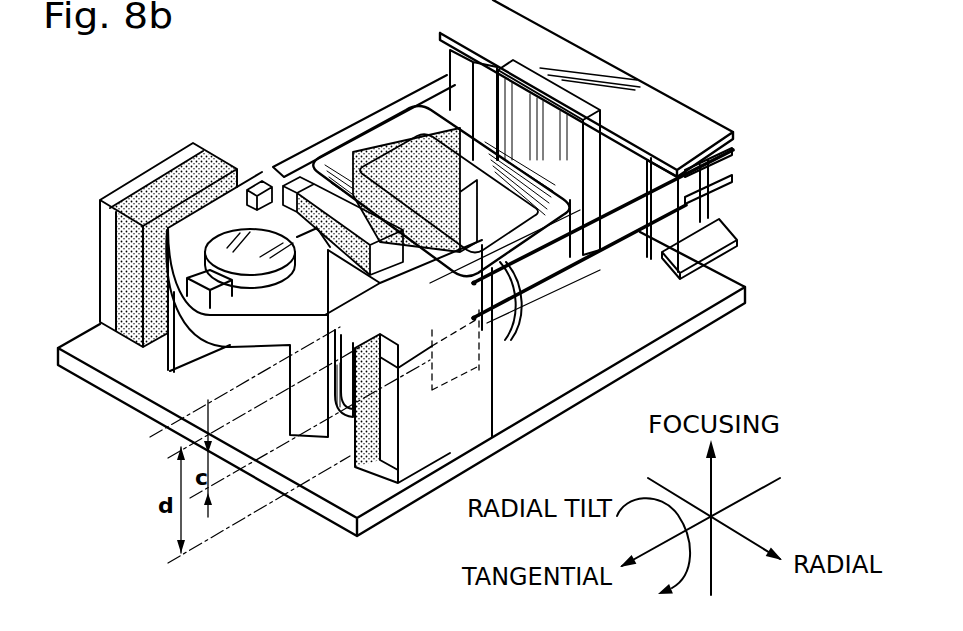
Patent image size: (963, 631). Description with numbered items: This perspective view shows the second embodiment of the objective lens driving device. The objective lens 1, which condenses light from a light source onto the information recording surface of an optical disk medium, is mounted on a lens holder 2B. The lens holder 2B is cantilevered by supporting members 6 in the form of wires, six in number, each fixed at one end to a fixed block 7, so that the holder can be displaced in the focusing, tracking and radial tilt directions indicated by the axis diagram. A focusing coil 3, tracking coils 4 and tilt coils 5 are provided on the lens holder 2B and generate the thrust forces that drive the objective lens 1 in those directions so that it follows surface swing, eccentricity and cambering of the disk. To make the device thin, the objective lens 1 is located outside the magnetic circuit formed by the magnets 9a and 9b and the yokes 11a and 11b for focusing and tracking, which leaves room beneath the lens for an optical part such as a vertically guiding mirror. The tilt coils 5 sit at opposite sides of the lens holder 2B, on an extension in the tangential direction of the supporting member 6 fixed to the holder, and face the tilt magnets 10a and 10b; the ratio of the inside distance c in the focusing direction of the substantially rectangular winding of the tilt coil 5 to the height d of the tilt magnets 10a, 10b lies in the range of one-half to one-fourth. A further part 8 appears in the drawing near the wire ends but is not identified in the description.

The objective lens 1 is at (288, 263).
The lens holder 2B is at (210, 318).
The focusing coil 3 is at (551, 294).
The tracking coils 4 is at (503, 325).
The tilt coils 5 is at (133, 283).
The supporting members 6 is at (423, 80).
The fixed block 7 is at (592, 70).
The wire fixing plate (printed circuit board) 8 is at (658, 255).
The magnet 9a is at (313, 167).
The magnet 9b is at (360, 153).
The tilt magnet 10a is at (345, 470).
The tilt magnet 10b is at (118, 233).
The yoke 11a is at (263, 185).
The yoke 11b is at (390, 112).